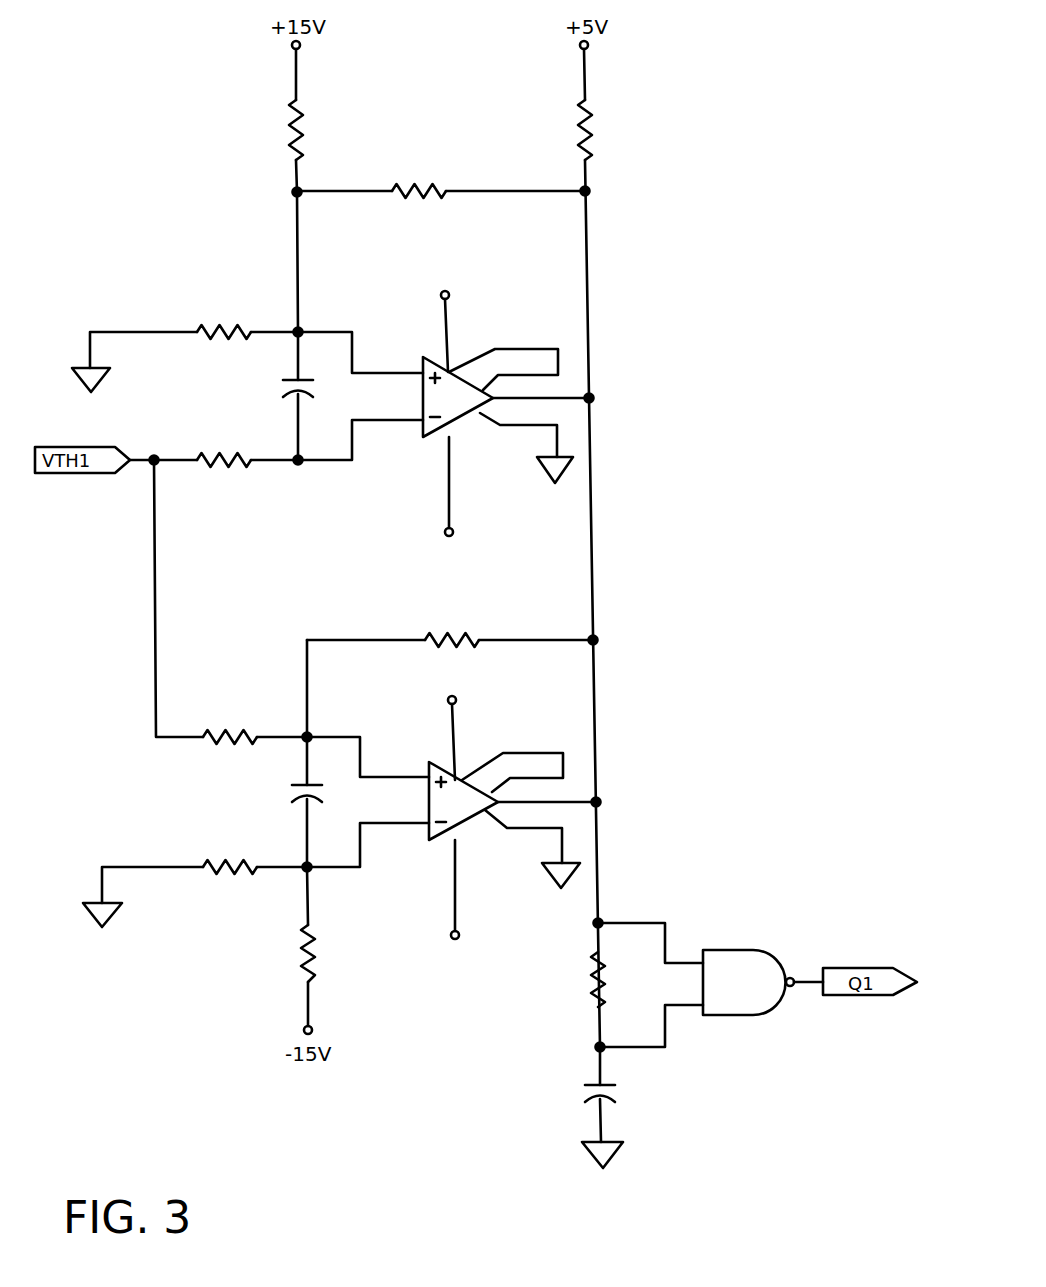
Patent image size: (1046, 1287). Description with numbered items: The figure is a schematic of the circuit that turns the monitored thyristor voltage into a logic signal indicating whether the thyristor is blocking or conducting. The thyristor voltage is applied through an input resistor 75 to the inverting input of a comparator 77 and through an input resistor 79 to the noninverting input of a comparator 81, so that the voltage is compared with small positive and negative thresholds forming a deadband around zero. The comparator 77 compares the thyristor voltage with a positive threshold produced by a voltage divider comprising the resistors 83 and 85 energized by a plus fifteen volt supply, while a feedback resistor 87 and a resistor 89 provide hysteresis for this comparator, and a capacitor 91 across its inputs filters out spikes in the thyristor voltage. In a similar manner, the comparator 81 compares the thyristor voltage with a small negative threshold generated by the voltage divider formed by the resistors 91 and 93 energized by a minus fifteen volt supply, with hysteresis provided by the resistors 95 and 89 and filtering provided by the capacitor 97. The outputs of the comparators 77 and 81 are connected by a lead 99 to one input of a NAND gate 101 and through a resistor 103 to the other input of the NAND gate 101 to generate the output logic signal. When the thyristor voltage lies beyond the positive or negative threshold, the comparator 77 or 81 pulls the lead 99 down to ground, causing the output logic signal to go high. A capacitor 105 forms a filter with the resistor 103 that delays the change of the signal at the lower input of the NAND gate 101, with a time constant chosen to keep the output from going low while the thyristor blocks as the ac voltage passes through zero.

The input resistor 75 is at (222, 470).
The comparator 77 is at (450, 371).
The input resistor 79 is at (218, 735).
The comparator 81 is at (462, 779).
The resistor 83 is at (290, 130).
The resistor 85 is at (213, 330).
The feedback resistor 87 is at (402, 186).
The resistor 89 is at (588, 128).
The capacitor 91 is at (291, 379).
The resistor 93 is at (218, 862).
The resistor 95 is at (435, 637).
The capacitor 97 is at (297, 790).
The lead 99 is at (598, 872).
The NAND gate 101 is at (760, 955).
The resistor 103 is at (590, 980).
The capacitor 105 is at (620, 1090).